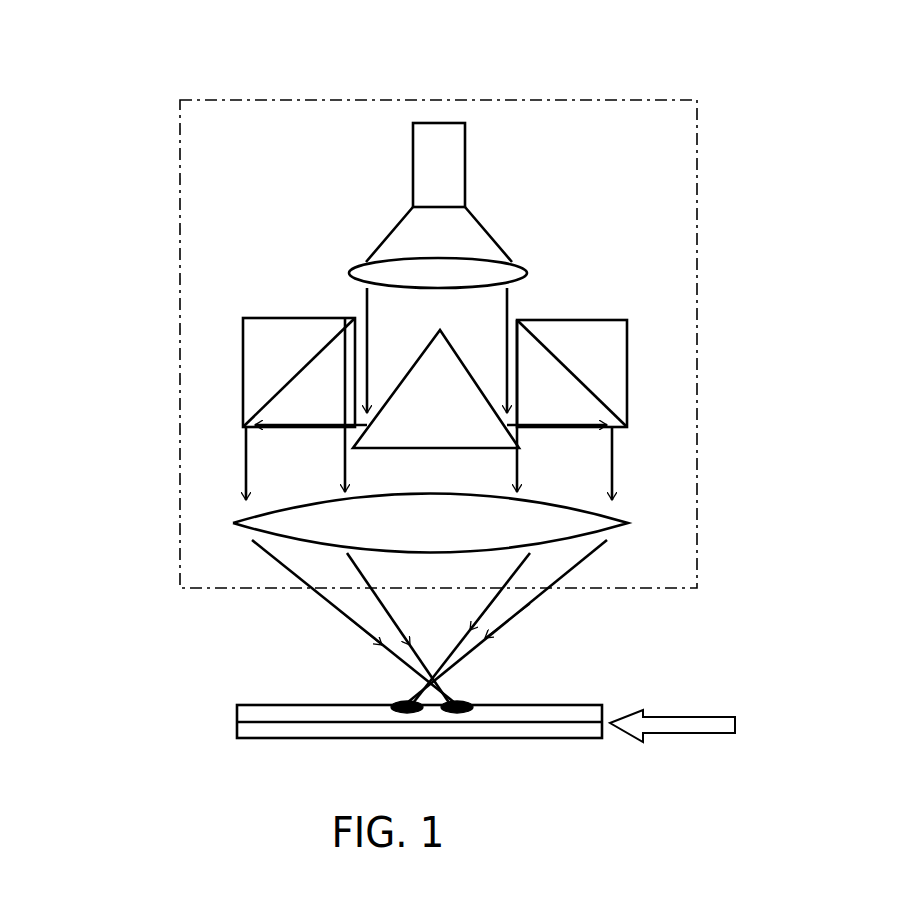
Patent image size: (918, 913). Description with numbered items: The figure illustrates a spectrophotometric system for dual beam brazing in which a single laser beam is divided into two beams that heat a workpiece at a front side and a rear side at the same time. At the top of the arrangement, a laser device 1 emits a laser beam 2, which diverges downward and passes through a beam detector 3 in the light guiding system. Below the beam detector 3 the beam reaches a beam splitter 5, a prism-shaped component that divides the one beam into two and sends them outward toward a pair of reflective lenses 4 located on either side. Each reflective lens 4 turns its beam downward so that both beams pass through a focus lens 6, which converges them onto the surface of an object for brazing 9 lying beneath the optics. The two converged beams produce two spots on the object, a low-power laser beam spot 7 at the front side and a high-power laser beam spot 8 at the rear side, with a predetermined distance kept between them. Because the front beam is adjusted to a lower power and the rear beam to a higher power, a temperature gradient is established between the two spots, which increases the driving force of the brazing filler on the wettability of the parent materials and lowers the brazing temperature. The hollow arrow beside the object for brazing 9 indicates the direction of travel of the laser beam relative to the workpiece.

The laser device 1 is at (445, 180).
The laser beam 2 is at (390, 253).
The beam detector 3 is at (345, 264).
The reflective lens 4 is at (266, 358).
The beam splitter 5 is at (485, 432).
The focus lens 6 is at (263, 530).
The low-power laser beam spot at the front side 7 is at (400, 705).
The high-power laser beam spot at the rear side 8 is at (460, 705).
The object for brazing 9 is at (237, 722).